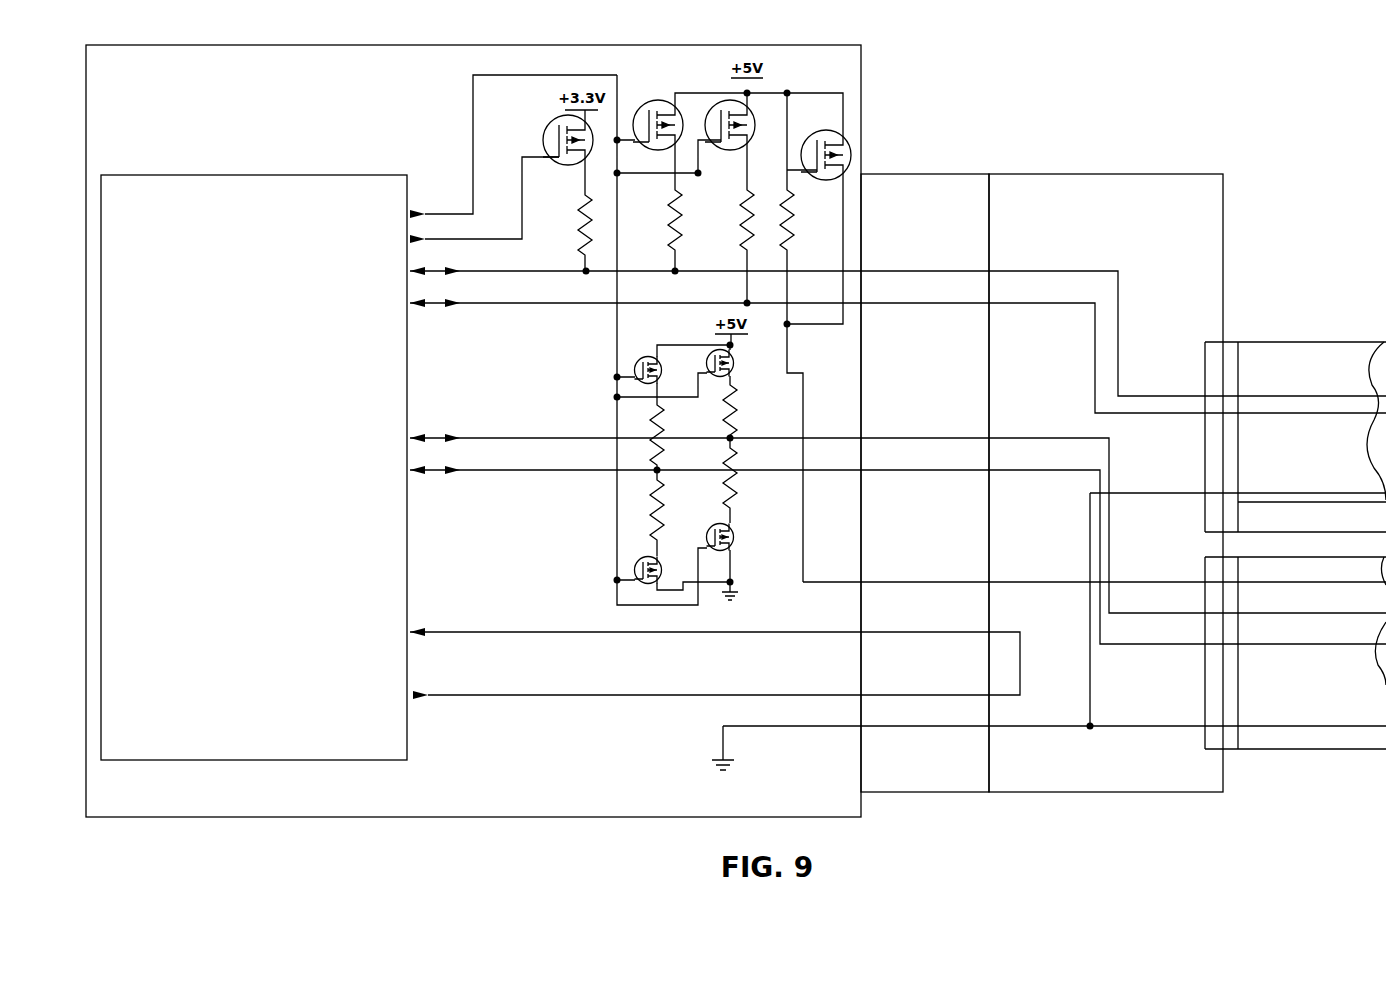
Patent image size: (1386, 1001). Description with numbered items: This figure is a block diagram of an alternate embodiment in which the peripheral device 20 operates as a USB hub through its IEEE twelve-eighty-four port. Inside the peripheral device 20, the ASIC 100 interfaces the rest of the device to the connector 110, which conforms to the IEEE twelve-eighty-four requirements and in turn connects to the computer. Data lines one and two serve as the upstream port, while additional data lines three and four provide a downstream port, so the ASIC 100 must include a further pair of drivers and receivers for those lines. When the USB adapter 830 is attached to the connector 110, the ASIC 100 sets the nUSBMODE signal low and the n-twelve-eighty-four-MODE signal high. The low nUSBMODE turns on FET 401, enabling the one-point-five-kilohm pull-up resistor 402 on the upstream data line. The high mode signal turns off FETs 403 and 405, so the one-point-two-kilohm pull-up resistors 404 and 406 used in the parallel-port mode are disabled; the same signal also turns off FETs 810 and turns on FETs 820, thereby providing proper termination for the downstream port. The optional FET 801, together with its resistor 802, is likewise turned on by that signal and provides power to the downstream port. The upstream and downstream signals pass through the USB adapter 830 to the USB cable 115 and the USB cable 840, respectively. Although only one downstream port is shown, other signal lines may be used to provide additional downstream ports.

The peripheral device 20 is at (614, 786).
The ASIC 100 is at (148, 734).
The connector 110 is at (877, 793).
The USB cable 115 is at (1315, 341).
The FET 401 is at (545, 143).
The 1.5K pull-up resistor 402 is at (563, 236).
The FET 403 is at (642, 103).
The 1.2K pull-up resistor 404 is at (672, 232).
The FET 405 is at (753, 127).
The 1.2K pull-up resistor 406 is at (740, 228).
The optional FET 801 is at (851, 153).
The resistor 802 is at (795, 214).
The FETs 810 is at (690, 325).
The FETs 820 is at (698, 615).
The USB adapter 830 is at (1035, 793).
The USB cable 840 is at (1255, 750).